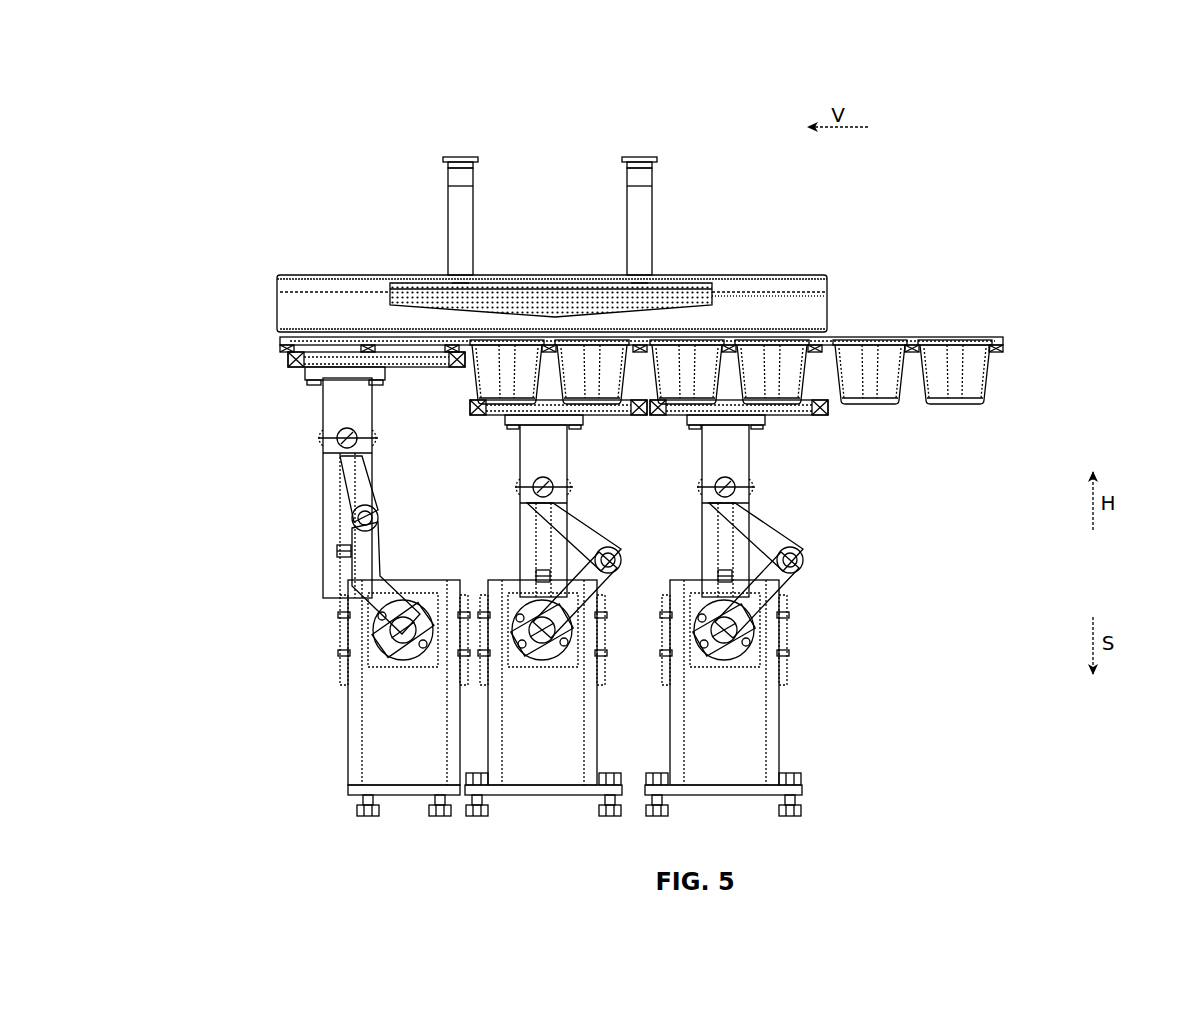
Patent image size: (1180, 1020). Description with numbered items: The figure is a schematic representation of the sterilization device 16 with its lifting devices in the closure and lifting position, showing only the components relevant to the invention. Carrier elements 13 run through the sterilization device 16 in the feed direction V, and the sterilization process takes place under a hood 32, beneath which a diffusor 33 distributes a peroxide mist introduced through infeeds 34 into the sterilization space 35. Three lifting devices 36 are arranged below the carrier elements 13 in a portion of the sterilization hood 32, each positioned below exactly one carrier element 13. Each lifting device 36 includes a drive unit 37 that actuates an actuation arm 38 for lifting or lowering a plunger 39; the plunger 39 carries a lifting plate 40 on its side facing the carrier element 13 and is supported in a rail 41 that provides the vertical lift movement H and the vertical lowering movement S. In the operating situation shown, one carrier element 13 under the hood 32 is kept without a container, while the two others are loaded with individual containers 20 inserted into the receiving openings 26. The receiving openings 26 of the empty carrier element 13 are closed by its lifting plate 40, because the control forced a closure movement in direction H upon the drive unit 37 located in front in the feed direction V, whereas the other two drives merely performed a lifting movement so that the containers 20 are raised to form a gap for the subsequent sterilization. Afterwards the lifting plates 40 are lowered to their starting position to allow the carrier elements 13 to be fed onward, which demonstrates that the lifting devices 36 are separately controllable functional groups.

The carrier element 13 is at (270, 351).
The sterilization device 16 is at (1012, 204).
The container 20 is at (872, 366).
The receiving opening 26 is at (333, 345).
The hood 32 is at (761, 270).
The diffusor 33 is at (650, 299).
The infeed 34 is at (490, 207).
The sterilization space 35 is at (807, 311).
The lifting device 36 is at (340, 771).
The drive unit 37 is at (381, 724).
The actuation arm 38 is at (346, 597).
The plunger 39 is at (333, 411).
The lifting plate 40 is at (415, 378).
The rail 41 is at (296, 556).